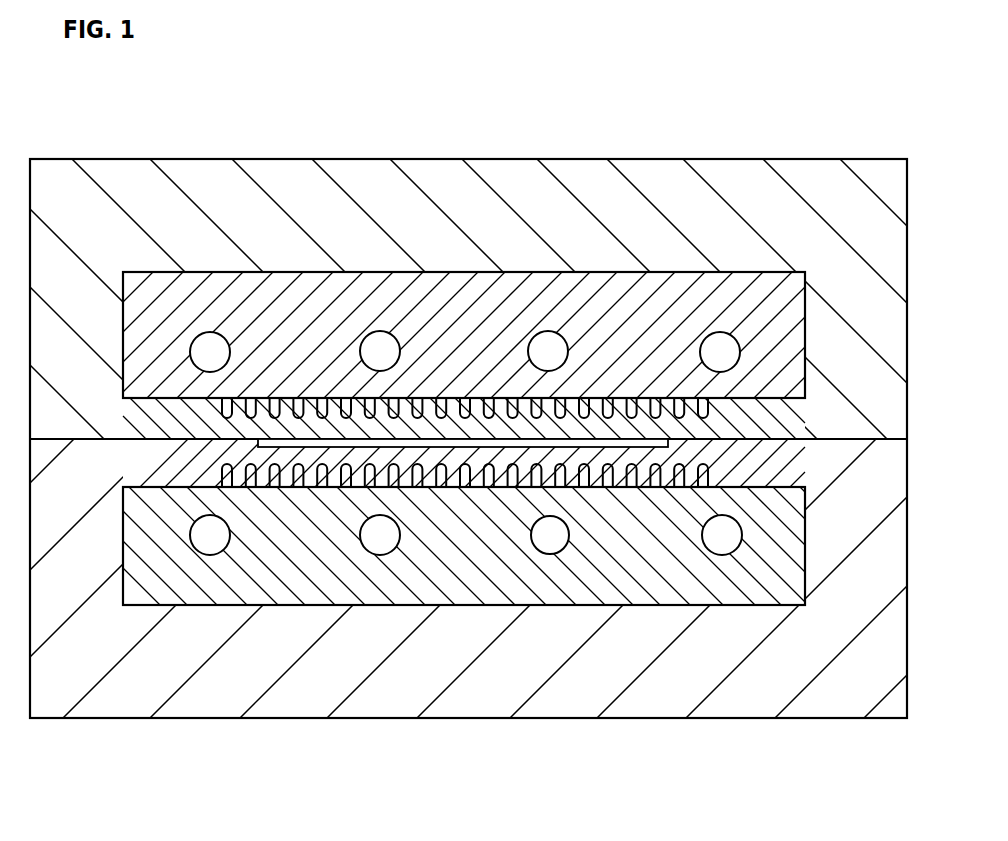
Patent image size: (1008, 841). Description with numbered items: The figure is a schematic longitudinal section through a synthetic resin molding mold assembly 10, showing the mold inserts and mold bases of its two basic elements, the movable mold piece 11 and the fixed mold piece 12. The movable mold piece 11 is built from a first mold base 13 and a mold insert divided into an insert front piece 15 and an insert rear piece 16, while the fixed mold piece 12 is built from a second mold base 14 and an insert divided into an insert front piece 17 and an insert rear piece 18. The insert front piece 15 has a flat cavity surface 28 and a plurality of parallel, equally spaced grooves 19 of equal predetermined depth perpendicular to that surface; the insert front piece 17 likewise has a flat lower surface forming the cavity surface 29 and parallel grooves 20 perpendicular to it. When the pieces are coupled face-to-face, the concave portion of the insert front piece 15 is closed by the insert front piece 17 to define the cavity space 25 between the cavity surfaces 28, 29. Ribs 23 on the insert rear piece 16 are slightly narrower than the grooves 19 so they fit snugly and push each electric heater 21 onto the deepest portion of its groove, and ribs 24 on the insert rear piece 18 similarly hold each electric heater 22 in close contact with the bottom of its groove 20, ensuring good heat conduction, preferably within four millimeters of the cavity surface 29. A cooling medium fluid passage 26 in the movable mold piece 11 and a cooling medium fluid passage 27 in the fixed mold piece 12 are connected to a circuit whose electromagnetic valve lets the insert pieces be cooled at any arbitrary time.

The mold assembly 10 is at (588, 159).
The movable mold piece 11 is at (350, 720).
The fixed mold piece 12 is at (285, 159).
The mold base of the movable mold piece 13 is at (640, 718).
The mold base of the fixed mold piece 14 is at (760, 172).
The insert front piece of the movable mold piece 15 is at (757, 480).
The insert rear piece of the movable mold piece 16 is at (612, 607).
The insert front piece of the fixed mold piece 17 is at (750, 405).
The insert rear piece of the fixed mold piece 18 is at (648, 272).
The grooves 19 is at (275, 490).
The grooves 20 is at (283, 400).
The electric heater 21 is at (658, 470).
The electric heater 22 is at (658, 418).
The ribs 23 is at (655, 470).
The ribs 24 is at (645, 405).
The cavity space 25 is at (461, 440).
The cooling medium fluid passage 26 is at (212, 555).
The cooling medium fluid passage 27 is at (210, 332).
The cavity surface 28 is at (414, 458).
The cavity surface 29 is at (344, 426).